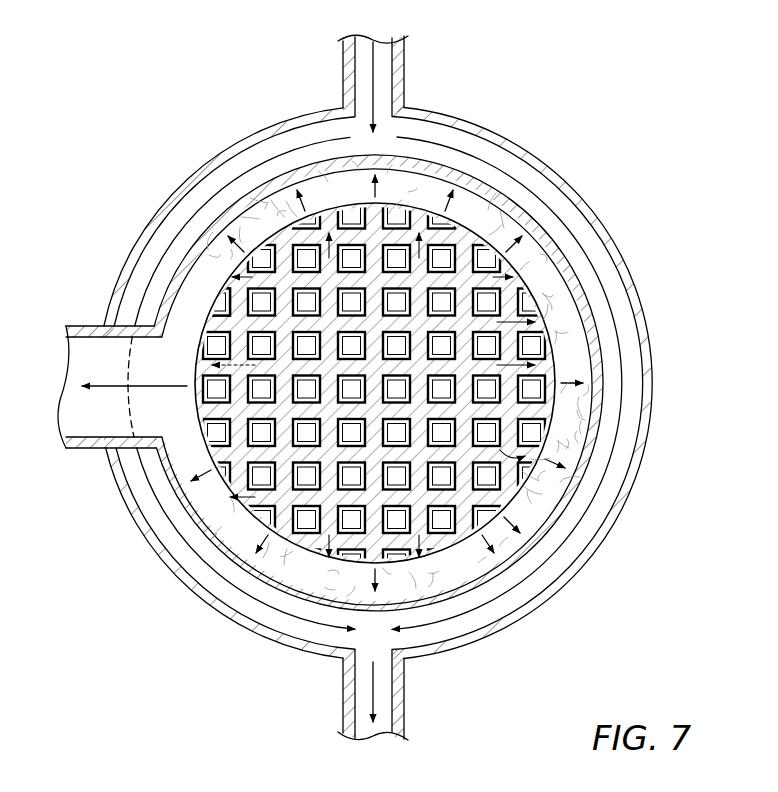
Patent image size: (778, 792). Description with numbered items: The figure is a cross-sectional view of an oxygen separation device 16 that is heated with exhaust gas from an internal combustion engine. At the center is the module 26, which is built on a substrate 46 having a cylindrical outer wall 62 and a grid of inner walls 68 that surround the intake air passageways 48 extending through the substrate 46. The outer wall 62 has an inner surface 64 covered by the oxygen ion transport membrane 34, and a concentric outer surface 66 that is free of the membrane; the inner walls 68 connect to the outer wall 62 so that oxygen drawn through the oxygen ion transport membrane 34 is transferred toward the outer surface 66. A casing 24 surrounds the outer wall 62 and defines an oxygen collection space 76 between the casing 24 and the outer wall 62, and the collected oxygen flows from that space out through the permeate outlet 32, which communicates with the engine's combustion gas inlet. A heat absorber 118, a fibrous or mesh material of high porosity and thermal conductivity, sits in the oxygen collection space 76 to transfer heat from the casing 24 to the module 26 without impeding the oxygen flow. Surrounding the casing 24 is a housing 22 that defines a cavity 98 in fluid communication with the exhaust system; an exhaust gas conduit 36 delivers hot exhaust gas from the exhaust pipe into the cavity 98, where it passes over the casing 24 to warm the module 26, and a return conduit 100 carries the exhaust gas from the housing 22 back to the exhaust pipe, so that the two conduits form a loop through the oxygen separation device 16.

The oxygen separation device 16 is at (632, 152).
The housing 22 is at (423, 163).
The casing 24 is at (148, 545).
The module 26 is at (565, 357).
The permeate outlet 32 is at (85, 452).
The oxygen ion transport membrane 34 is at (293, 252).
The exhaust gas conduit 36 is at (348, 82).
The substrate 46 is at (533, 407).
The intake air passageways 48 is at (490, 295).
The outer wall 62 is at (530, 287).
The inner surface 64 is at (217, 282).
The outer surface 66 is at (172, 330).
The inner walls 68 is at (500, 480).
The oxygen collection space 76 is at (267, 562).
The cavity 98 is at (203, 578).
The return conduit 100 is at (400, 693).
The heat absorber 118 is at (500, 562).